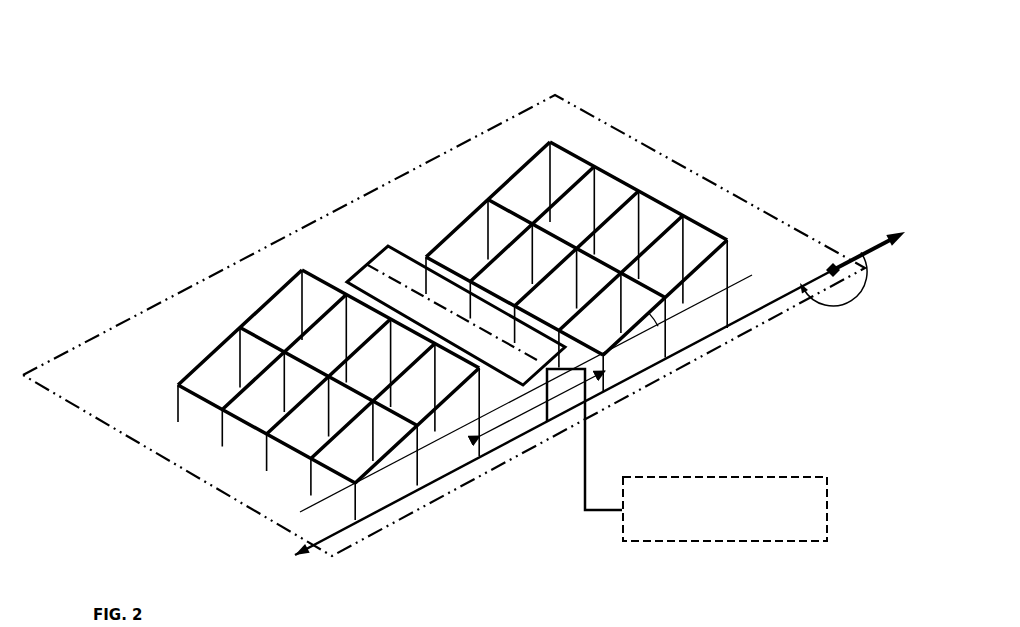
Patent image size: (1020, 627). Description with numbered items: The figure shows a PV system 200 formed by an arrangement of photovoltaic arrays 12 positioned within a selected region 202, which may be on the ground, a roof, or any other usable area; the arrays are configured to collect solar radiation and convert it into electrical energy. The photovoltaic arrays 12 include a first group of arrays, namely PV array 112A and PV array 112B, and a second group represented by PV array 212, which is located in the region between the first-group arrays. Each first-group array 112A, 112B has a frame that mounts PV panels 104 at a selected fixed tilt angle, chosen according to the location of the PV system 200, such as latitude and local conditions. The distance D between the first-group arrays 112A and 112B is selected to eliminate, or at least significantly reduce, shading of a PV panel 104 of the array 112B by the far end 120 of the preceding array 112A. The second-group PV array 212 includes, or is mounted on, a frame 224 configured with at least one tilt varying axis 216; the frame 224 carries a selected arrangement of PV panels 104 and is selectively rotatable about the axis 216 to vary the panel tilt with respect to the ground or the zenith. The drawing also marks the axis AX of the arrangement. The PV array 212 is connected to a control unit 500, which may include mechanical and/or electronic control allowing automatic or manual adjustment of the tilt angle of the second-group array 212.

The PV system 200 is at (170, 183).
The selected region 202 is at (87, 370).
The PV panel 104 is at (210, 375).
The PV array of the first group 112A is at (313, 374).
The PV array of the first group 112B is at (488, 197).
The far end 120 is at (322, 280).
The photovoltaic arrays 12 is at (222, 215).
The PV array of the second group 212 is at (363, 265).
The tilt varying axis 216 is at (393, 277).
The frame 224 is at (570, 369).
The control unit 500 is at (725, 509).
The distance D is at (523, 414).
The axis AX is at (873, 252).